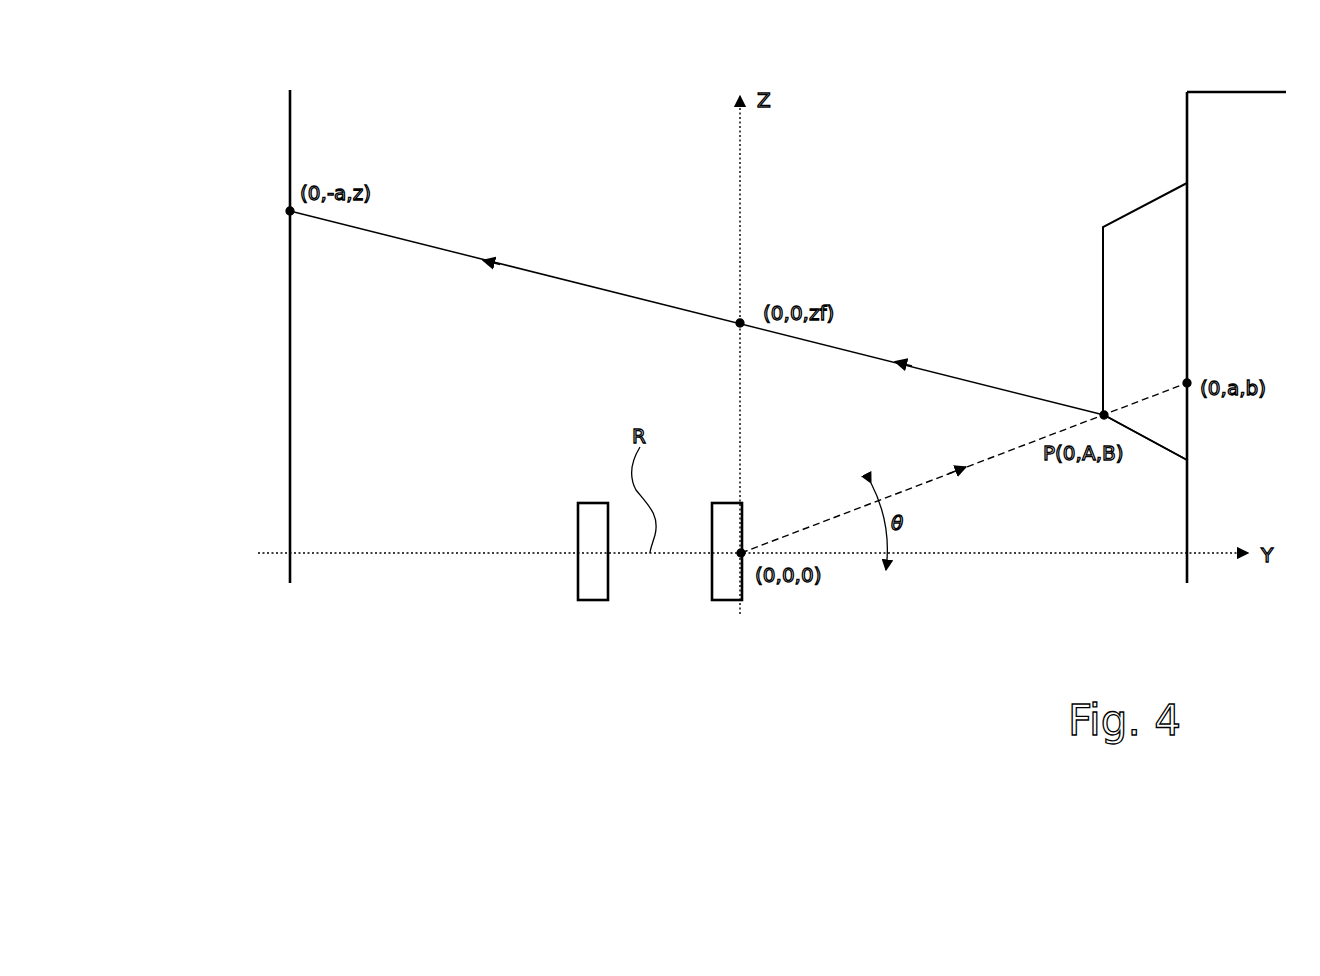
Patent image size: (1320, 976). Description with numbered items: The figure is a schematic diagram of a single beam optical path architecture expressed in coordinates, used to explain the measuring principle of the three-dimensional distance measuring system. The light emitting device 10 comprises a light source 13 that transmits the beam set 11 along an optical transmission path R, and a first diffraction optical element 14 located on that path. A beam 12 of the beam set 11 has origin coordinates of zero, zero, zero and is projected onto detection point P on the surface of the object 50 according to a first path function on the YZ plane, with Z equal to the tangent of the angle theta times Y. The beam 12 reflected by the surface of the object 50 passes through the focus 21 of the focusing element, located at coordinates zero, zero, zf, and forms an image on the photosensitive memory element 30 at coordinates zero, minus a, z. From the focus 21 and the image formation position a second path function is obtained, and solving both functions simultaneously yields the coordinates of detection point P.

The light emitting device 10 is at (660, 622).
The beam set 11 is at (943, 482).
The beam 12 is at (1025, 447).
The light source 13 is at (593, 600).
The first diffraction optical element 14 is at (721, 604).
The focus 21 is at (743, 312).
The photosensitive memory element 30 is at (288, 310).
The object 50 is at (1148, 228).